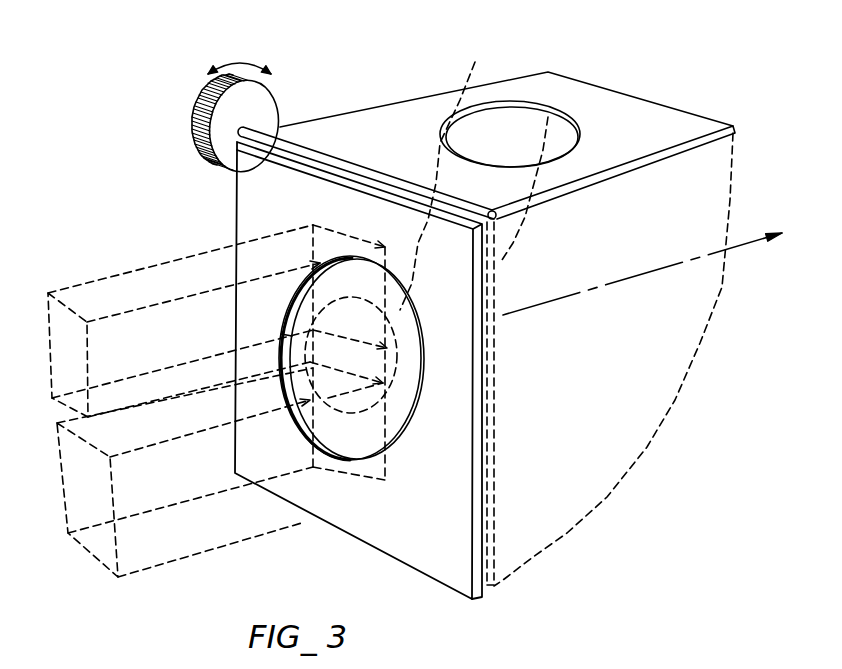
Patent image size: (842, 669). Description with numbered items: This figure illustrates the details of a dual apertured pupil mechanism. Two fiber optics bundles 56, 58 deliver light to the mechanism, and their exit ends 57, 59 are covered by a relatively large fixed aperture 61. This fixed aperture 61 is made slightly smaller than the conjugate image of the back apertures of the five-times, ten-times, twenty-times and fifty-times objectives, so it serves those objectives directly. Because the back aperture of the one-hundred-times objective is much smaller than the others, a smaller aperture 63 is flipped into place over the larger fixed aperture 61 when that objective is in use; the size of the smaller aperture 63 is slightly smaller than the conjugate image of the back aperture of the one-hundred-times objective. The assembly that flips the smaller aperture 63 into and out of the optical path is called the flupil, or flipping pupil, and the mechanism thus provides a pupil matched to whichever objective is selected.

The fiber optics bundle 56 is at (137, 273).
The exit end of fiber optics bundle 57 is at (335, 230).
The fiber optics bundle 58 is at (224, 545).
The exit end of fiber optics bundle 59 is at (355, 540).
The fixed aperture 61 is at (410, 300).
The smaller aperture 63 is at (490, 103).